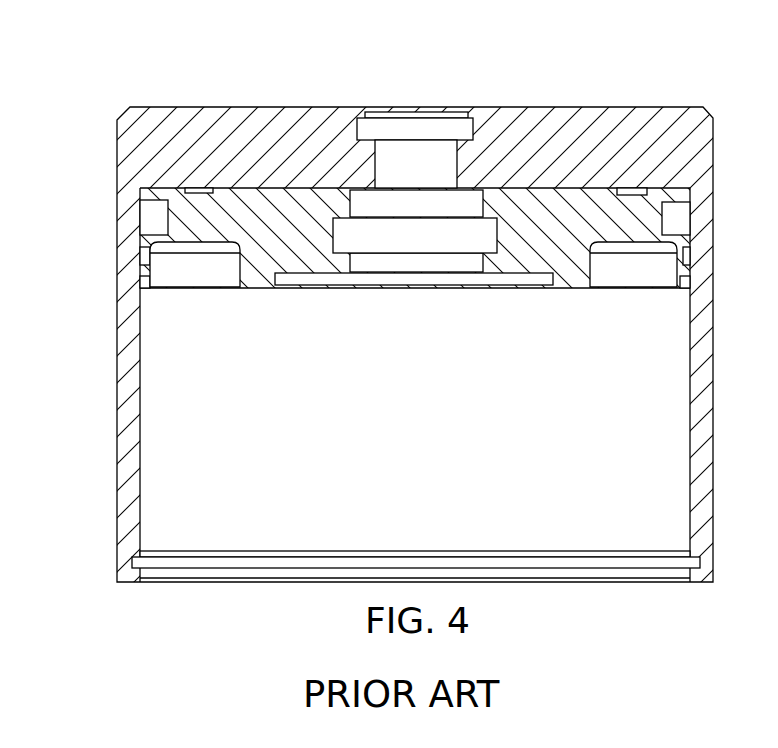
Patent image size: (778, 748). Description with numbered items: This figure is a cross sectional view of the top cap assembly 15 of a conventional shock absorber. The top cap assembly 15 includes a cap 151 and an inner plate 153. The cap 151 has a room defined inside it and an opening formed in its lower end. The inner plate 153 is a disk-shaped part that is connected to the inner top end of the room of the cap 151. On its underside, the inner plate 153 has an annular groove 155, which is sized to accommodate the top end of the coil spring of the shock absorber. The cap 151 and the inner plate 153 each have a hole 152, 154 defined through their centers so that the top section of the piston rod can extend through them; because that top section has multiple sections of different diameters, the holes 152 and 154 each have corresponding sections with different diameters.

The top cap assembly 15 is at (636, 82).
The cap 151 is at (188, 128).
The hole 152 is at (415, 153).
The inner plate 153 is at (190, 218).
The hole 154 is at (420, 242).
The annular groove 155 is at (198, 270).